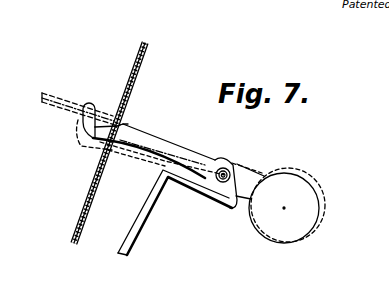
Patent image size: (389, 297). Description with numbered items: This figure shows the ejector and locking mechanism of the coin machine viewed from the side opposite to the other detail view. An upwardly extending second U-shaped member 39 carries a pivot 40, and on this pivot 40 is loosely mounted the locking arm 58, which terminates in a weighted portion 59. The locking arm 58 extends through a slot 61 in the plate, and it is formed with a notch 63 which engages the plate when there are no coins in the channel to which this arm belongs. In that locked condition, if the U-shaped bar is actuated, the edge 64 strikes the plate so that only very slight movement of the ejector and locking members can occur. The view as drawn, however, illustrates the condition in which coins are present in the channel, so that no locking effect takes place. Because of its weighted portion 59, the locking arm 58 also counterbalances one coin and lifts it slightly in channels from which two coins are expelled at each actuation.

The second U-shaped member 39 is at (138, 226).
The pivot 40 is at (224, 170).
The locking arm 58 is at (178, 147).
The weighted portion 59 is at (278, 203).
The slot 61 is at (107, 148).
The notch 63 is at (100, 127).
The edge 64 is at (130, 127).